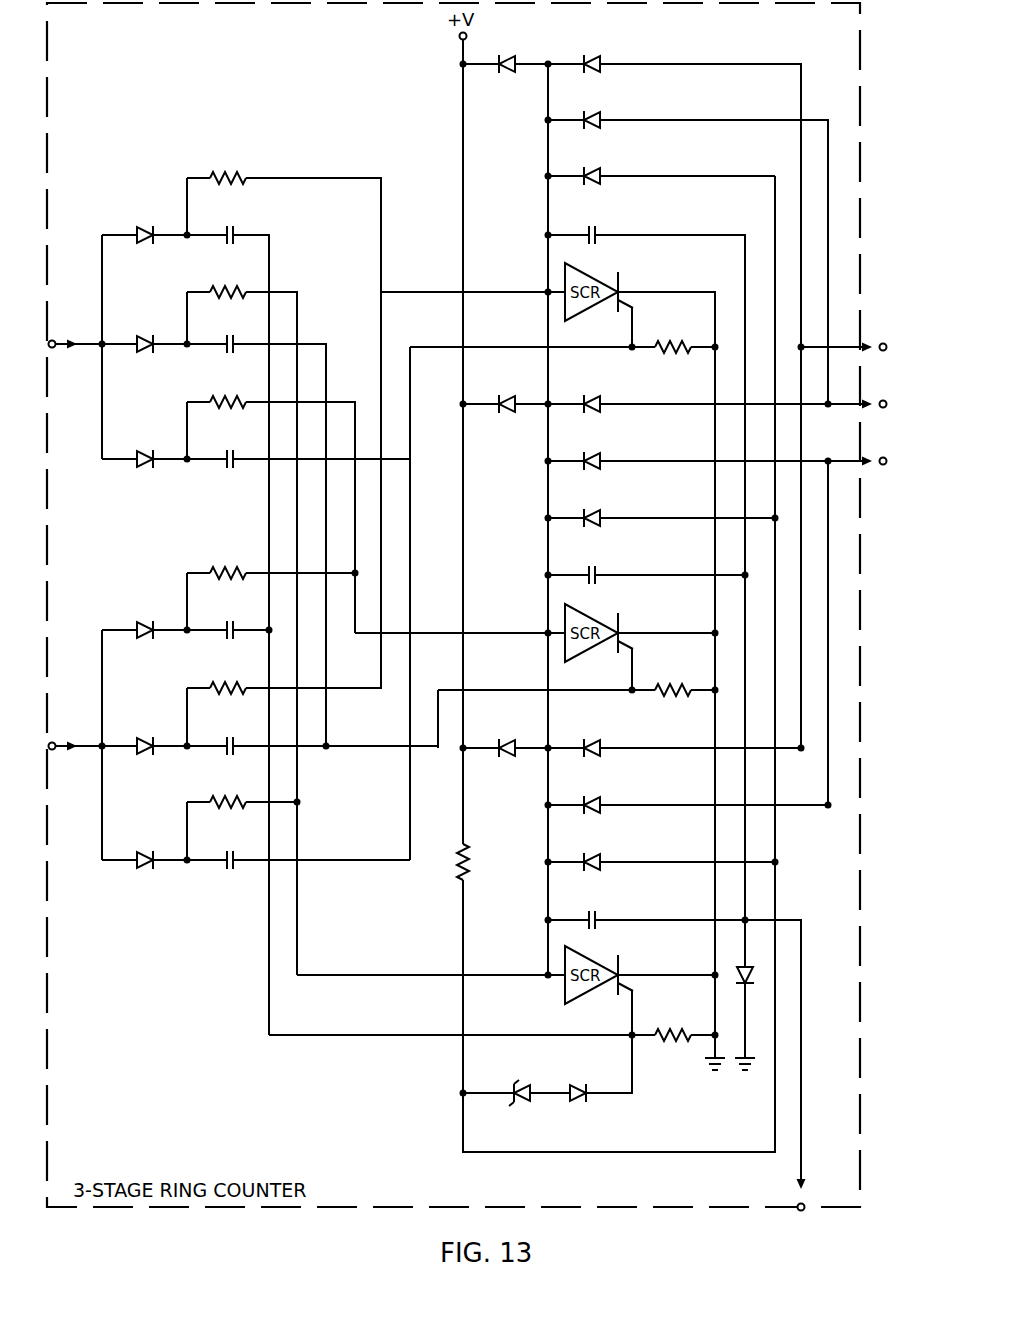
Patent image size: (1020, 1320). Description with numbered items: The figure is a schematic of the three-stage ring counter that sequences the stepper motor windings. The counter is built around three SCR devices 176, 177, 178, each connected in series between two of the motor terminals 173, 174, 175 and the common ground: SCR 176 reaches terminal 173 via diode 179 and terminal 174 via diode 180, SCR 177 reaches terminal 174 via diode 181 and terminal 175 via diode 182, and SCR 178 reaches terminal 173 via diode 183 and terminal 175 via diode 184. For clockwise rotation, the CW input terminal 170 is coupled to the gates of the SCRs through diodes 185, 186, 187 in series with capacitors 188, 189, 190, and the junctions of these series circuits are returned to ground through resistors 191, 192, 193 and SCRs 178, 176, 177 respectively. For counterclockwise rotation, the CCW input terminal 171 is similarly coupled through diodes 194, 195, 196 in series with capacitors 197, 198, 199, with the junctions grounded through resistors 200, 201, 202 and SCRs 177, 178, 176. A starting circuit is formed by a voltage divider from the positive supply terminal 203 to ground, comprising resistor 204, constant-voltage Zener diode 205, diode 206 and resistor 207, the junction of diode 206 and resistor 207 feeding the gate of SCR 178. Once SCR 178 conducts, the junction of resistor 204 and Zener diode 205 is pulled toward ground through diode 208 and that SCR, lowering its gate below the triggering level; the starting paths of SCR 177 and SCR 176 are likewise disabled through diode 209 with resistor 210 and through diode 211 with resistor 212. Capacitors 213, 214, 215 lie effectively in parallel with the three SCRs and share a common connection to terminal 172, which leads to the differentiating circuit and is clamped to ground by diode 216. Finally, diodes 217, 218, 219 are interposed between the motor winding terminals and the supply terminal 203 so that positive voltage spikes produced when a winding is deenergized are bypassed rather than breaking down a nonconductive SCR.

The CW input terminal 170 is at (54, 742).
The CCW input terminal 171 is at (54, 340).
The terminal 172 is at (804, 1204).
The motor terminal 173 is at (883, 342).
The motor terminal 174 is at (883, 399).
The motor terminal 175 is at (883, 456).
The SCR device 176 is at (598, 280).
The SCR device 177 is at (600, 620).
The SCR device 178 is at (600, 962).
The diode 179 is at (594, 56).
The diode 180 is at (594, 112).
The diode 181 is at (594, 396).
The diode 182 is at (594, 453).
The diode 183 is at (594, 740).
The diode 184 is at (595, 796).
The diode 185 is at (145, 852).
The diode 186 is at (145, 737).
The diode 187 is at (145, 621).
The capacitor 188 is at (226, 856).
The capacitor 189 is at (226, 742).
The capacitor 190 is at (226, 626).
The resistor 191 is at (232, 796).
The resistor 192 is at (232, 682).
The resistor 193 is at (232, 567).
The diode 194 is at (145, 450).
The diode 195 is at (145, 335).
The diode 196 is at (142, 226).
The capacitor 197 is at (226, 455).
The capacitor 198 is at (226, 340).
The capacitor 199 is at (232, 228).
The resistor 200 is at (232, 395).
The resistor 201 is at (232, 285).
The resistor 202 is at (232, 170).
The supply terminal 203 is at (458, 36).
The resistor 204 is at (472, 862).
The Zener diode 205 is at (514, 1086).
The diode 206 is at (580, 1086).
The resistor 207 is at (674, 1027).
The diode 208 is at (596, 853).
The diode 209 is at (598, 510).
The resistor 210 is at (673, 683).
The diode 211 is at (594, 168).
The resistor 212 is at (673, 340).
The capacitor 213 is at (598, 228).
The capacitor 214 is at (598, 568).
The capacitor 215 is at (598, 913).
The diode 216 is at (740, 970).
The diode 217 is at (507, 56).
The diode 218 is at (507, 396).
The diode 219 is at (509, 740).